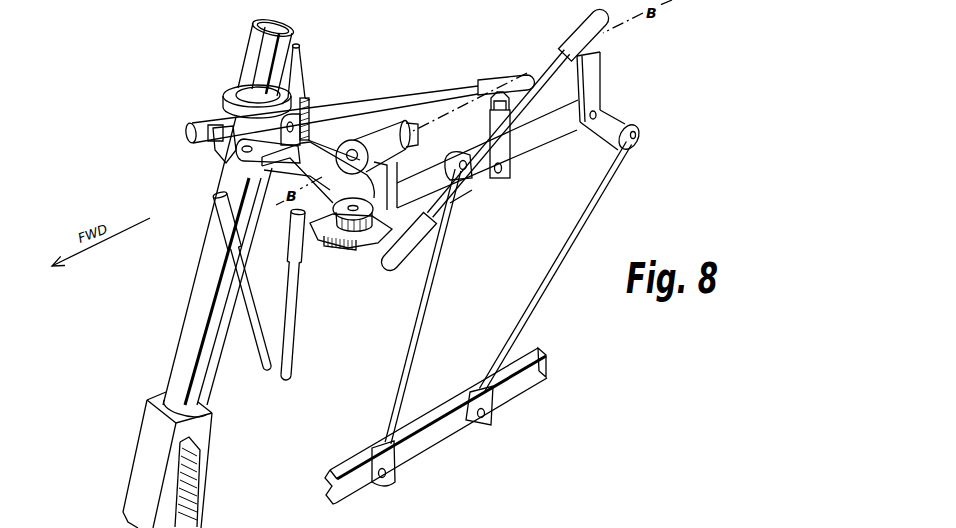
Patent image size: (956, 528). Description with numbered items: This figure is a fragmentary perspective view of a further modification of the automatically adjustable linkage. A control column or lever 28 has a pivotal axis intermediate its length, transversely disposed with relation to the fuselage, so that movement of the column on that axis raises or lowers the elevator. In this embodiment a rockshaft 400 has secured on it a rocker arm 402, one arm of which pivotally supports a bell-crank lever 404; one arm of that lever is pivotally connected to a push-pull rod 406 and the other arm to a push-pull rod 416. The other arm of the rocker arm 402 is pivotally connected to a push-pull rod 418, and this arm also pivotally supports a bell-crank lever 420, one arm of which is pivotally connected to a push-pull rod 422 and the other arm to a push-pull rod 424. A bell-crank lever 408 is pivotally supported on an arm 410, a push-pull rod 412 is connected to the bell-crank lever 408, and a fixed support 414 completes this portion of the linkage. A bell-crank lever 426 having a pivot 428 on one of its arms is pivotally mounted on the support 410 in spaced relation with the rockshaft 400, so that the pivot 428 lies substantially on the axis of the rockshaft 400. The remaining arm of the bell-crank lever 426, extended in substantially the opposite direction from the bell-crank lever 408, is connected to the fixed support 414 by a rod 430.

The control column 28 is at (193, 286).
The rockshaft 400 is at (350, 157).
The rocker arm 402 is at (300, 197).
The bell-crank lever 404 is at (337, 248).
The push-pull rod 406 is at (472, 193).
The bell-crank lever 408 is at (603, 85).
The arm 410 is at (551, 142).
The push-pull rod 412 is at (595, 207).
The fixed support 414 is at (439, 404).
The push-pull rod 416 is at (293, 312).
The push-pull rod 418 is at (306, 78).
The bell-crank lever 420 is at (220, 158).
The push-pull rod 422 is at (265, 336).
The push-pull rod 424 is at (405, 93).
The bell-crank lever 426 is at (510, 173).
The pivot 428 is at (490, 104).
The rod 430 is at (426, 326).